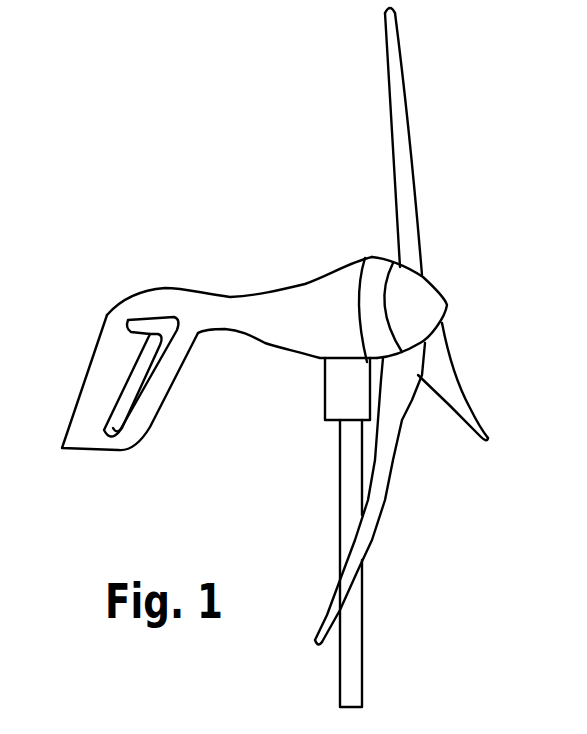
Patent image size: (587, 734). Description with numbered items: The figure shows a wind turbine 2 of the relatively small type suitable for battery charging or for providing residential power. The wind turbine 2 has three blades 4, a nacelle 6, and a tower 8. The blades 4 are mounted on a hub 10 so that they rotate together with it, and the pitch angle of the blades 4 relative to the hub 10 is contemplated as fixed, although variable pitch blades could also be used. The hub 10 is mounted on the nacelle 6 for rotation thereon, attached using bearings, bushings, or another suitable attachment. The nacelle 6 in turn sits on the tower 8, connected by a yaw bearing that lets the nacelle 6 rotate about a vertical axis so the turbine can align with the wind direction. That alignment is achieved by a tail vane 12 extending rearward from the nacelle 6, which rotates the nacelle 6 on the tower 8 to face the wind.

The wind turbine 2 is at (160, 186).
The blades 4 is at (410, 157).
The nacelle 6 is at (310, 294).
The tower 8 is at (352, 648).
The hub 10 is at (430, 298).
The tail vane 12 is at (100, 375).